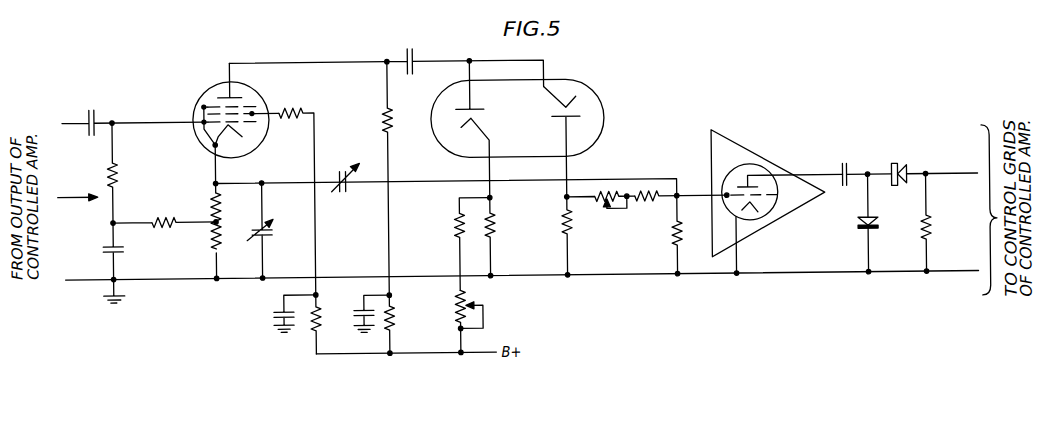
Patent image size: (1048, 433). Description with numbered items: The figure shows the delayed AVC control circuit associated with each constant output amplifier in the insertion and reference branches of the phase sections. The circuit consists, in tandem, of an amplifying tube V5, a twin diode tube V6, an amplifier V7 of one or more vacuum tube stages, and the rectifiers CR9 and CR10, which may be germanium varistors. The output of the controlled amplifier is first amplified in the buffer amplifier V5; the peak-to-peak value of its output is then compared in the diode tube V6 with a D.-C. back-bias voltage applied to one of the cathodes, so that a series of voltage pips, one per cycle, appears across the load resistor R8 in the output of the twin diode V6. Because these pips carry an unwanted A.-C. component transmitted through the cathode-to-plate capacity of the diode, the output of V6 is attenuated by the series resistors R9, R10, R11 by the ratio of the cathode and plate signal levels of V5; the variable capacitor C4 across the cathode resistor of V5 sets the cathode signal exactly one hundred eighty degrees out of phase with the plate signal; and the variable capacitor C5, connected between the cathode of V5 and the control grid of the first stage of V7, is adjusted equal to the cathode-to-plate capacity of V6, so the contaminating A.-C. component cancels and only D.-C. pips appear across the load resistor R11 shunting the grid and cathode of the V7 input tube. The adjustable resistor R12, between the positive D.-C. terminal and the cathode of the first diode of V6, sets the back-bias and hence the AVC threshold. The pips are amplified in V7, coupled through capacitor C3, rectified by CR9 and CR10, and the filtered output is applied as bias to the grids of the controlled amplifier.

The amplifying tube V5 is at (207, 88).
The twin diode tube V6 is at (586, 84).
The amplifier V7 is at (769, 163).
The capacitor C3 is at (843, 164).
The variable capacitor C4 is at (268, 231).
The variable capacitor C5 is at (345, 167).
The load resistor R8 is at (561, 212).
The series resistor R9 is at (608, 185).
The series resistor R10 is at (651, 184).
The load resistor R11 is at (669, 232).
The adjustable resistor R12 is at (455, 296).
The rectifier CR9 is at (898, 167).
The rectifier CR10 is at (860, 226).